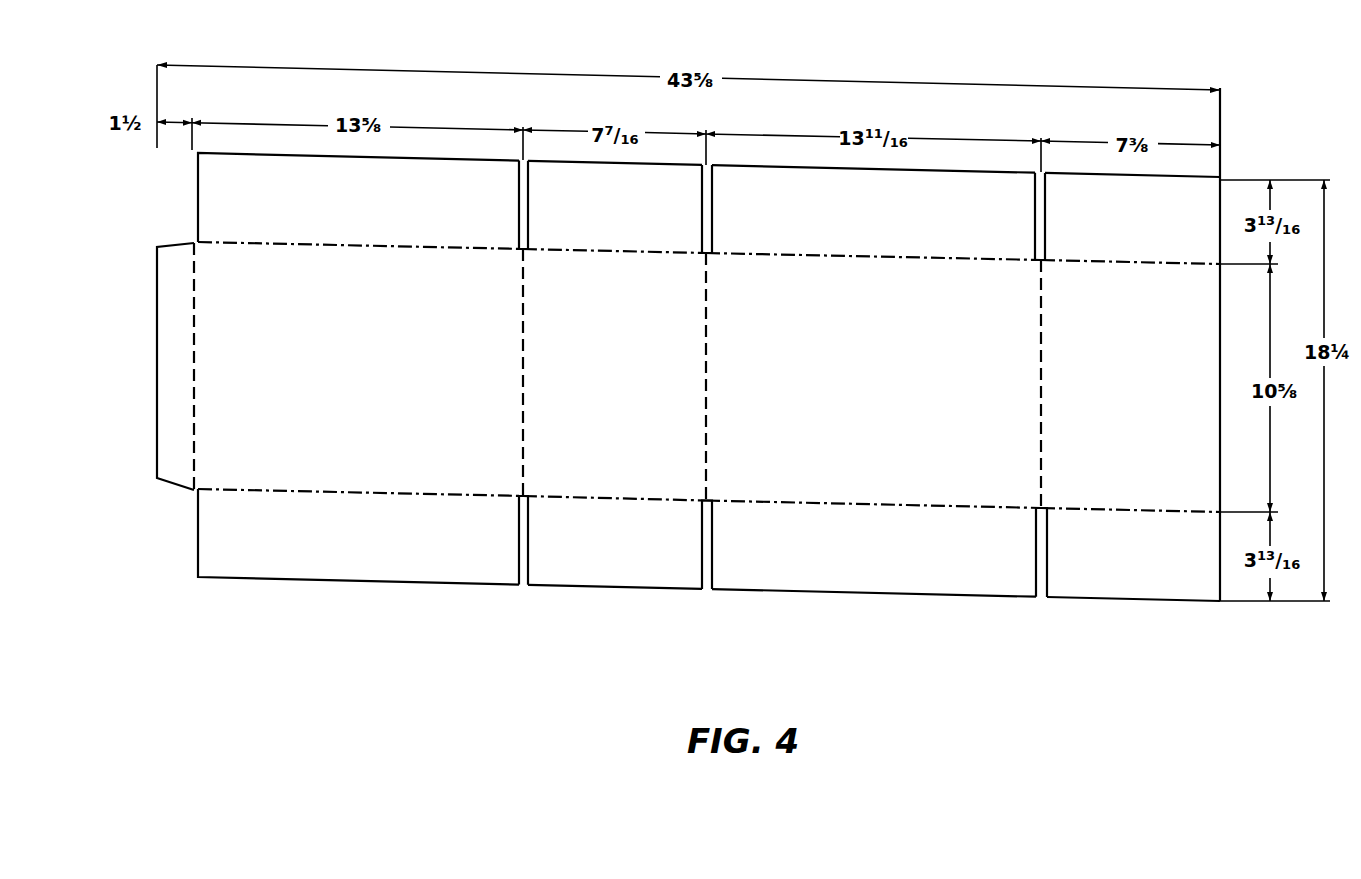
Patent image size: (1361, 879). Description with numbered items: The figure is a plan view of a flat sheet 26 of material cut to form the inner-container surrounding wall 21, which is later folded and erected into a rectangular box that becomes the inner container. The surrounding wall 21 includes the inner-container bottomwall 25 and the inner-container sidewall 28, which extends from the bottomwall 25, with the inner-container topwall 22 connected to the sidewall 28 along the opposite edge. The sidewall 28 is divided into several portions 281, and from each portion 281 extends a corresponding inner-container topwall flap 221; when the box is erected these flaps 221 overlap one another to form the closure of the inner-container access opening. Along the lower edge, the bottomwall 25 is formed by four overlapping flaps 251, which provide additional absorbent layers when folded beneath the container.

The inner-container surrounding wall 21 is at (172, 532).
The inner-container topwall 22 is at (215, 190).
The inner-container topwall flaps 221 is at (473, 200).
The inner-container bottomwall 25 is at (310, 563).
The overlapping flaps 251 is at (607, 570).
The sheet of material 26 is at (868, 412).
The inner-container sidewall 28 is at (217, 405).
The portion of inner-container sidewall 281 is at (466, 412).